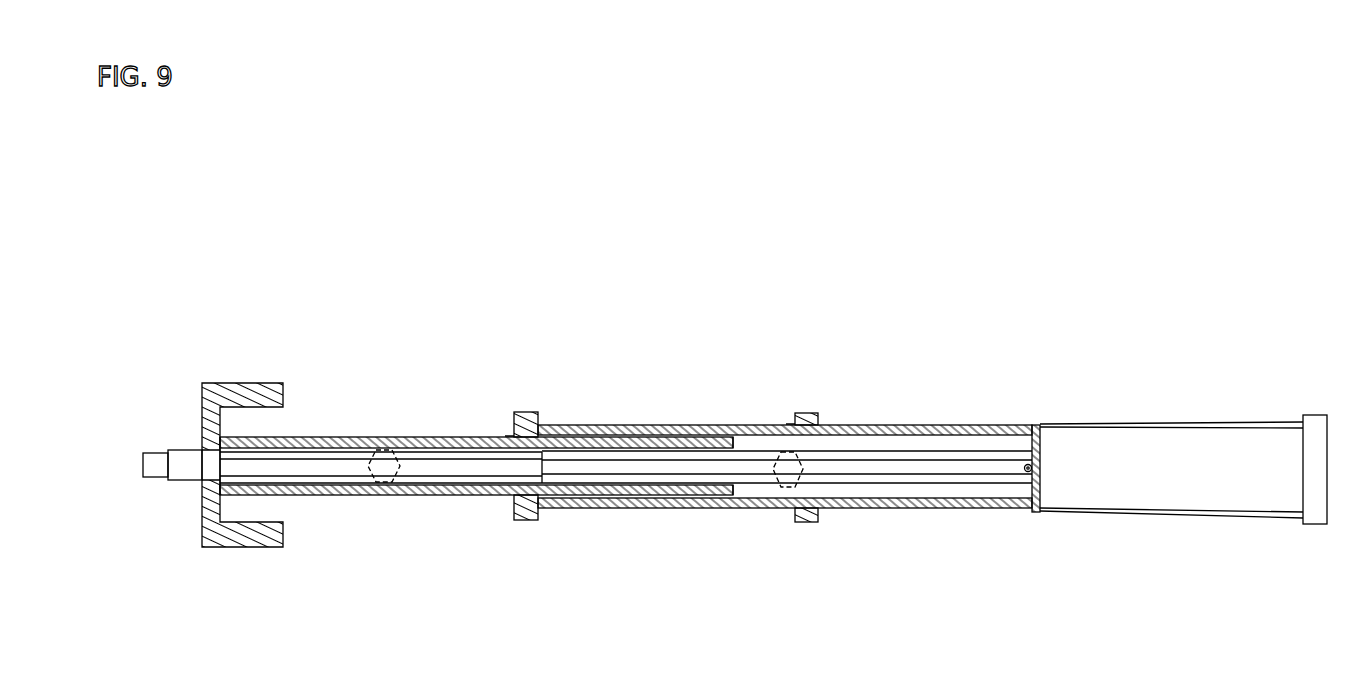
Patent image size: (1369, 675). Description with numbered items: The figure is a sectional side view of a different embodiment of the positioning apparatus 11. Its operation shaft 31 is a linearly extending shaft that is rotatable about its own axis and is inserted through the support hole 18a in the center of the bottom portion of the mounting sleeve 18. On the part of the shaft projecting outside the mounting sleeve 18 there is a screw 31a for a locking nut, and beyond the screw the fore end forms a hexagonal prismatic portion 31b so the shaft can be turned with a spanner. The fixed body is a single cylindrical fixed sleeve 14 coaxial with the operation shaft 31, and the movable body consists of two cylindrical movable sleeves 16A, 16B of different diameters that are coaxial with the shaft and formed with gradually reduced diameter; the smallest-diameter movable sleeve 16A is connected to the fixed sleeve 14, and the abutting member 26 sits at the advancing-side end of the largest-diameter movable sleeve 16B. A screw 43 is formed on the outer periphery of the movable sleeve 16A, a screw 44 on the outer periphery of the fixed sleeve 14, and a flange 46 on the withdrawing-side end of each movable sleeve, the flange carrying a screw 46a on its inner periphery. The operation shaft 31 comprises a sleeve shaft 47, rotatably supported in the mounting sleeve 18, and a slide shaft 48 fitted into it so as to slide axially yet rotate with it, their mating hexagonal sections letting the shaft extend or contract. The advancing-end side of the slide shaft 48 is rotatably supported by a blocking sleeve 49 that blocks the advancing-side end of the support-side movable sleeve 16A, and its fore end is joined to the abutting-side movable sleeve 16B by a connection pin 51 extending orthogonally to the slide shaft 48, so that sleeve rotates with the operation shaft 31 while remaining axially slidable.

The positioning apparatus 11 is at (318, 316).
The fixed body 14 is at (476, 482).
The movable sleeve 16A is at (785, 481).
The movable sleeve 16B is at (1165, 517).
The mounting sleeve 18 is at (252, 548).
The support hole 18a is at (232, 468).
The abutting member 26 is at (1313, 526).
The operation shaft 31 is at (916, 451).
The screw 31a is at (185, 482).
The prismatic portion 31b is at (153, 480).
The screw 43 is at (618, 424).
The screw 44 is at (347, 436).
The flange 46 is at (527, 411).
The screw 46a is at (505, 436).
The sleeve shaft 47 is at (345, 478).
The slide shaft 48 is at (860, 467).
The blocking sleeve 49 is at (1040, 458).
The connection pin 51 is at (1022, 470).